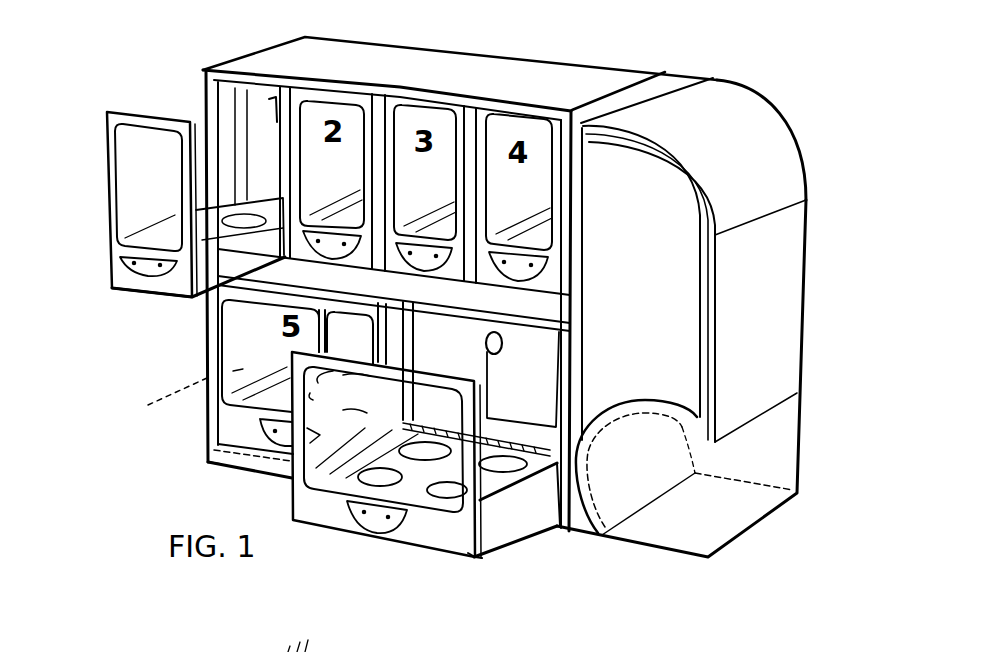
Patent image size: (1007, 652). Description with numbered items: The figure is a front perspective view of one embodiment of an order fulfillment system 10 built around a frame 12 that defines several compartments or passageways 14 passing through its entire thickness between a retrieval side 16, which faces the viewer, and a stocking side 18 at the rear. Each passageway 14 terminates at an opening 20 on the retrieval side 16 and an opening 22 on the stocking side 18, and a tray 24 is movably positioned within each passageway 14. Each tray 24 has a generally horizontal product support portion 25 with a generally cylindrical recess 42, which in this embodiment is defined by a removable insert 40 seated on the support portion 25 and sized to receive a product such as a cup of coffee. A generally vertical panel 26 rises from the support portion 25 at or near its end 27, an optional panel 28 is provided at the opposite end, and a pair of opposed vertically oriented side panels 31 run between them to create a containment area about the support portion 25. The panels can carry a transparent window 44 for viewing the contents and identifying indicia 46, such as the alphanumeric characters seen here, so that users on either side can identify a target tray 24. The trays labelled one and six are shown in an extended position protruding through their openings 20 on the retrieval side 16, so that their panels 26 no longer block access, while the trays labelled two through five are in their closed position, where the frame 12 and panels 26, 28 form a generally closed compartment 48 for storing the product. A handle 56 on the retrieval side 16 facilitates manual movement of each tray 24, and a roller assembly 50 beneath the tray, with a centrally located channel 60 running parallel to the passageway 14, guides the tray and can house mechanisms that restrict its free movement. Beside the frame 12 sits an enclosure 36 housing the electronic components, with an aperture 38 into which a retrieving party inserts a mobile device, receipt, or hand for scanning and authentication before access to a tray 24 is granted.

The order fulfillment system 10 is at (787, 68).
The frame 12 is at (290, 62).
The passageway 14 is at (257, 143).
The retrieval side 16 is at (208, 462).
The stocking side 18 is at (572, 66).
The opening 20 is at (517, 430).
The opening 22 is at (543, 340).
The tray 24 is at (161, 232).
The product support portion 25 is at (208, 222).
The panel 26 is at (123, 172).
The end 27 is at (257, 113).
The panel 28 is at (279, 128).
The side panel 31 is at (487, 556).
The enclosure 36 is at (782, 170).
The aperture 38 is at (730, 498).
The removable insert 40 is at (490, 480).
The recess 42 is at (357, 478).
The window 44 is at (137, 215).
The identifying indicia 46 is at (503, 348).
The compartment 48 is at (160, 407).
The roller assembly 50 is at (140, 288).
The handle 56 is at (142, 272).
The channel 60 is at (385, 540).